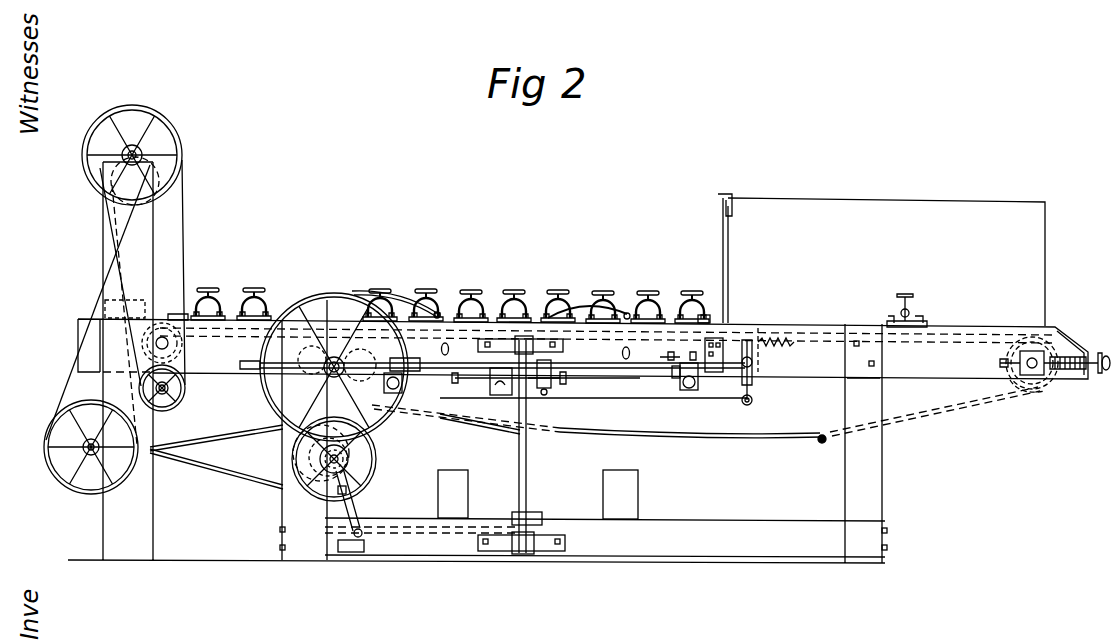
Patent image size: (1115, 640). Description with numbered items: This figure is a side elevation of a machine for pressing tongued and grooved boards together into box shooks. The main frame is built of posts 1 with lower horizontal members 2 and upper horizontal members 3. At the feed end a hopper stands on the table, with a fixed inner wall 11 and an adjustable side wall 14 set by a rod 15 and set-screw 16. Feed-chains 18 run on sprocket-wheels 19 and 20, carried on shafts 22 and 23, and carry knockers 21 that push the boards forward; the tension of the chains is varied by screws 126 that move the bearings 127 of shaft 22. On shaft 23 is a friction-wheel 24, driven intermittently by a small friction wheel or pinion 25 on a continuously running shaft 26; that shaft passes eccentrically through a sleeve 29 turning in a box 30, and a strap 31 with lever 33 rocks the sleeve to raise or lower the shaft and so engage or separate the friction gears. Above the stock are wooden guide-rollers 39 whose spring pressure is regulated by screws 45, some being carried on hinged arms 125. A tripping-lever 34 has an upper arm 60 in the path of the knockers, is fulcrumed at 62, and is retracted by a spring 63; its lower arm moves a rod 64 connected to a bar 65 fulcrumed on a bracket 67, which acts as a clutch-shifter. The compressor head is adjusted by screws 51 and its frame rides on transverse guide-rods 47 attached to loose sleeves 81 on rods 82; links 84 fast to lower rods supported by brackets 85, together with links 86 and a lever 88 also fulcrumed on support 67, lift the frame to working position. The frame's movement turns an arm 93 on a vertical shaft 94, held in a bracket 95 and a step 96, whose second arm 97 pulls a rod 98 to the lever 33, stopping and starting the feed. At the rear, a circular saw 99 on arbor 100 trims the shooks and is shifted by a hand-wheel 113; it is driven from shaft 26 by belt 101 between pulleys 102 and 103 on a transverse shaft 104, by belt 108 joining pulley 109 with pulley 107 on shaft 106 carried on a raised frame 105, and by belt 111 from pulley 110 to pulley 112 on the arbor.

The posts 1 is at (132, 562).
The lower horizontal members 2 is at (638, 548).
The upper horizontal members 3 is at (78, 326).
The inner wall 11 is at (730, 242).
The adjustable side wall 14 is at (842, 196).
The rod 15 is at (916, 314).
The set-screw 16 is at (905, 293).
The feed-chains 18 is at (963, 408).
The sprocket-wheels 19 is at (1016, 392).
The sprocket-wheels 20 is at (310, 346).
The knockers 21 is at (822, 446).
The shaft 22 is at (1032, 389).
The shaft 23 is at (326, 372).
The friction-wheel 24 is at (326, 294).
The friction wheel or pinion 25 is at (352, 455).
The shaft 26 is at (310, 480).
The sleeve or journal-bearing 29 is at (305, 470).
The box 30 is at (328, 535).
The strap 31 is at (325, 470).
The lever 33 is at (348, 553).
The tripping-lever 34 is at (750, 392).
The guide-rollers 39 is at (212, 292).
The screws 45 is at (255, 290).
The transverse guide-rods 47 is at (402, 388).
The screws 51 is at (445, 343).
The upper arm 60 is at (760, 330).
The fulcrum 62 is at (754, 362).
The spring 63 is at (775, 342).
The rod 64 is at (732, 402).
The bar 65 is at (500, 398).
The bracket or fixed support 67 is at (478, 395).
The loose sleeves 81 is at (692, 392).
The rods 82 is at (660, 358).
The links 84 is at (704, 315).
The brackets 85 is at (718, 338).
The link 86 is at (548, 392).
The lever 88 is at (348, 490).
The arm 93 is at (615, 400).
The vertical shaft 94 is at (528, 470).
The bracket 95 is at (535, 338).
The step 96 is at (526, 553).
The second arm 97 is at (546, 518).
The rod 98 is at (440, 536).
The circular saw 99 is at (176, 314).
The arbor 100 is at (170, 344).
The belt 101 is at (205, 462).
The pulley 102 is at (272, 476).
The pulley 103 is at (80, 452).
The transverse shaft 104 is at (80, 497).
The raised frame 105 is at (108, 232).
The shaft 106 is at (145, 152).
The pulley 107 is at (165, 133).
The belt 108 is at (98, 290).
The pulley 109 is at (60, 410).
The pulley 110 is at (160, 185).
The belt 111 is at (186, 205).
The pulley 112 is at (184, 316).
The hand-wheel 113 is at (186, 393).
The arms 125 is at (400, 292).
The screws 126 is at (1088, 372).
The bearings 127 is at (1036, 355).